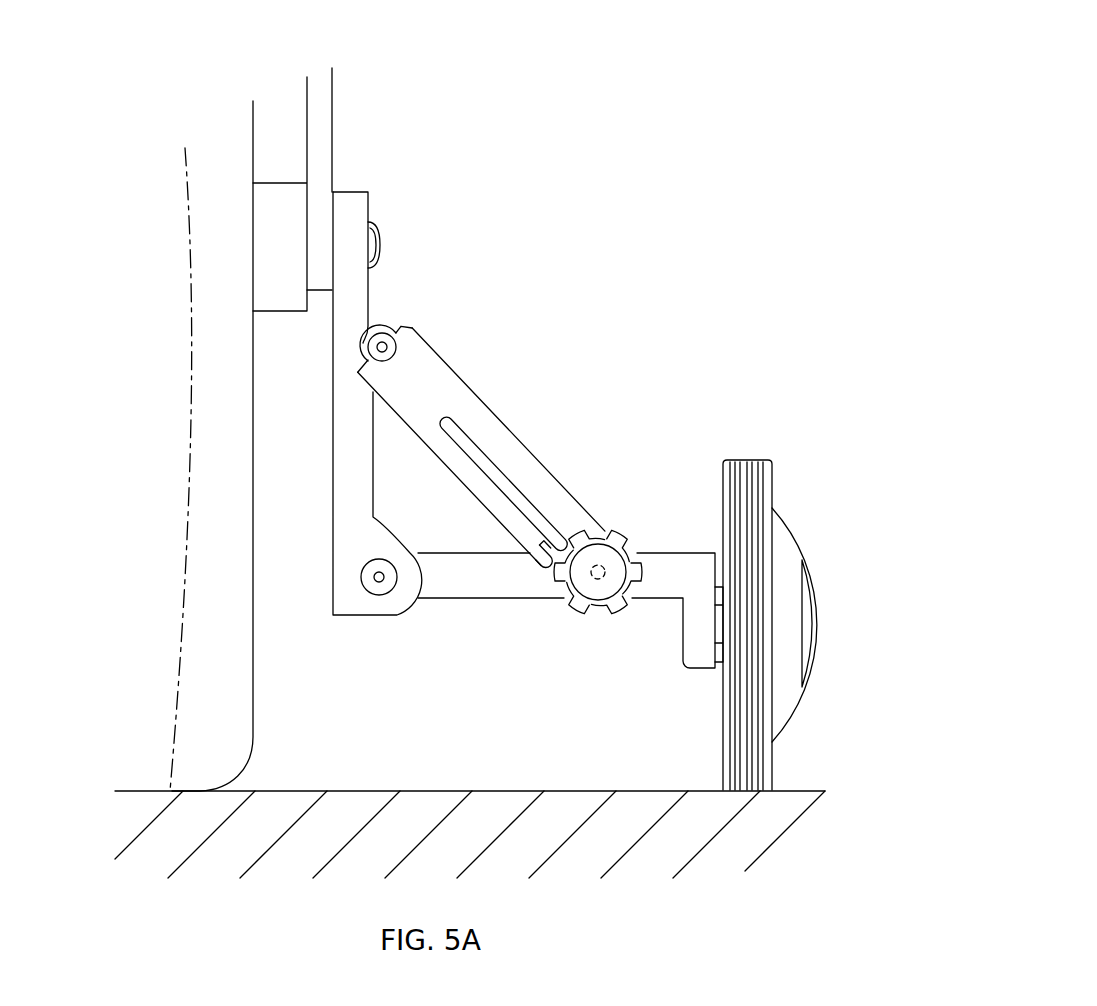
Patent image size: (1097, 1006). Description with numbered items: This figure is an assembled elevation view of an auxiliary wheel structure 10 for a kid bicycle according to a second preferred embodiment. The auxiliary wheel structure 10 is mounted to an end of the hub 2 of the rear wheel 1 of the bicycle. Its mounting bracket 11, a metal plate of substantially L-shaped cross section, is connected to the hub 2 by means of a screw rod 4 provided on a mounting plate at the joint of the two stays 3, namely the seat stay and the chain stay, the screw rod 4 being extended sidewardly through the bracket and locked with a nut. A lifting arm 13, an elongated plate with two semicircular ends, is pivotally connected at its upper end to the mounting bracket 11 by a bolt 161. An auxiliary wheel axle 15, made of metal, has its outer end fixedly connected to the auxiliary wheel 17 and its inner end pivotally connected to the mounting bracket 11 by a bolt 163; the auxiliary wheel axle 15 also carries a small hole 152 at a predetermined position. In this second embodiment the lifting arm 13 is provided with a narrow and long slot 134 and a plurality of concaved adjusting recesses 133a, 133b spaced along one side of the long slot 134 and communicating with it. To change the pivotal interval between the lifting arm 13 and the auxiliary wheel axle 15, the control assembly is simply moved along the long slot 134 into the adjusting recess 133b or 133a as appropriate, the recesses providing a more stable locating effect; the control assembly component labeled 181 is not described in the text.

The rear wheel 1 is at (203, 512).
The hub 2 is at (265, 232).
The stays 3 is at (323, 117).
The screw rod 4 is at (377, 233).
The auxiliary wheel structure 10 is at (636, 306).
The mounting bracket 11 is at (338, 518).
The lifting arm 13 is at (539, 449).
The auxiliary wheel axle 15 is at (492, 590).
The auxiliary wheel 17 is at (755, 458).
The long slot 134 is at (505, 498).
The adjusting recess 133a is at (555, 503).
The adjusting recess 133b is at (562, 532).
The small hole 152 is at (602, 577).
The bolt 161 is at (398, 325).
The bolt 163 is at (380, 595).
The gear 181 is at (596, 600).